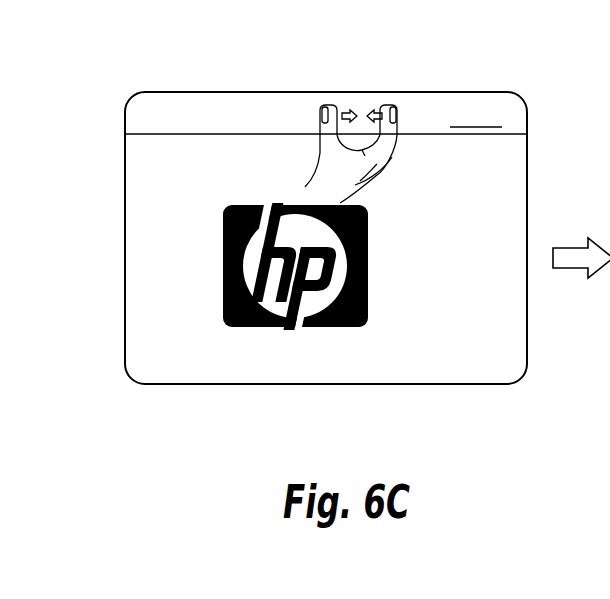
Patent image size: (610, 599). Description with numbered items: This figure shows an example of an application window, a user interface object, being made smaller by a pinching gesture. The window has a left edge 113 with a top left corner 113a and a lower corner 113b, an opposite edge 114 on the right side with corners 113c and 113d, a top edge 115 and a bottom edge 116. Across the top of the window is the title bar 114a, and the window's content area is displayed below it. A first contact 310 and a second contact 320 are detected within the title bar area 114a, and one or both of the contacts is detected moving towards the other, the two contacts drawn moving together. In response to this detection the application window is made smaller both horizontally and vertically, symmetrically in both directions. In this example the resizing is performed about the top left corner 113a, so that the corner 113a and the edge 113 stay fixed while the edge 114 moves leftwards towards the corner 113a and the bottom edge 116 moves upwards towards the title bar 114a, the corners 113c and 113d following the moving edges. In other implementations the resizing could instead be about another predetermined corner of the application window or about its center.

The edge 113 is at (125, 217).
The top left corner 113a is at (127, 103).
The corner 113b is at (133, 376).
The top-right corner of window 113c is at (523, 102).
The bottom-right corner of window 113d is at (519, 376).
The edge 114 is at (527, 211).
The title bar 114a is at (476, 116).
The edge 115 is at (463, 92).
The bottom edge 116 is at (362, 385).
The first contact 310 is at (335, 107).
The second contact 320 is at (388, 107).